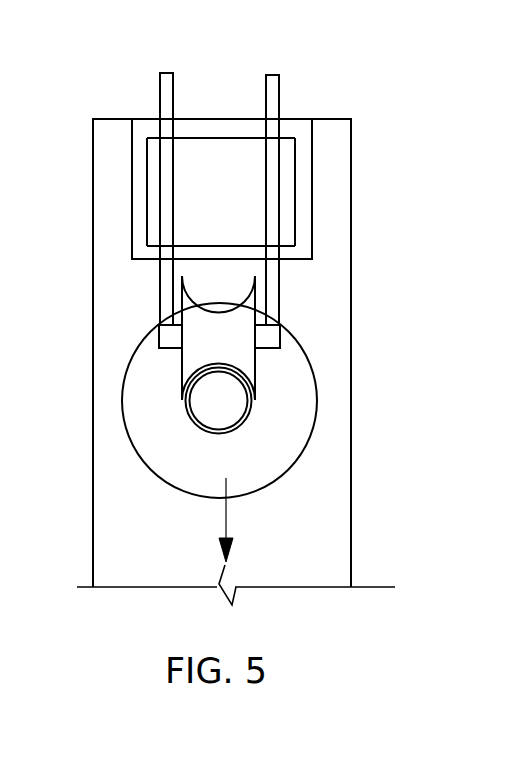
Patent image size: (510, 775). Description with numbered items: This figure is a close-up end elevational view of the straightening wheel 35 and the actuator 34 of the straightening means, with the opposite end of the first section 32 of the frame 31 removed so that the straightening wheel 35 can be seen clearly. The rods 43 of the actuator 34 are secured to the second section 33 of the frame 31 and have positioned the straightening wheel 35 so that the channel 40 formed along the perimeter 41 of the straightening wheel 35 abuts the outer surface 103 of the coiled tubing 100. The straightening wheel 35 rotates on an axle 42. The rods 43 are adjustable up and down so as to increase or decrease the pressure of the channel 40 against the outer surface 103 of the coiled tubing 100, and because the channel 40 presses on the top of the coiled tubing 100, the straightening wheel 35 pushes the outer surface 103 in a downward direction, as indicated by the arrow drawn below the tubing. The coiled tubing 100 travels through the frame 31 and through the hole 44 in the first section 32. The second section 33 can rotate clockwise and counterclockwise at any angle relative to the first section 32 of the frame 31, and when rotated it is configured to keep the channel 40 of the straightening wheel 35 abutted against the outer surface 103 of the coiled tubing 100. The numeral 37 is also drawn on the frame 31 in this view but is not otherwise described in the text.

The frame 31 is at (112, 165).
The first section 32 is at (110, 332).
The second section 33 is at (235, 130).
The actuator 34 is at (272, 75).
The straightening wheel 35 is at (242, 362).
The frame upright 37 is at (93, 255).
The channel 40 is at (210, 306).
The perimeter 41 is at (248, 283).
The axle 42 is at (272, 337).
The rods 43 is at (165, 80).
The hole 44 is at (135, 420).
The coiled tubing 100 is at (211, 432).
The outer surface 103 is at (252, 407).